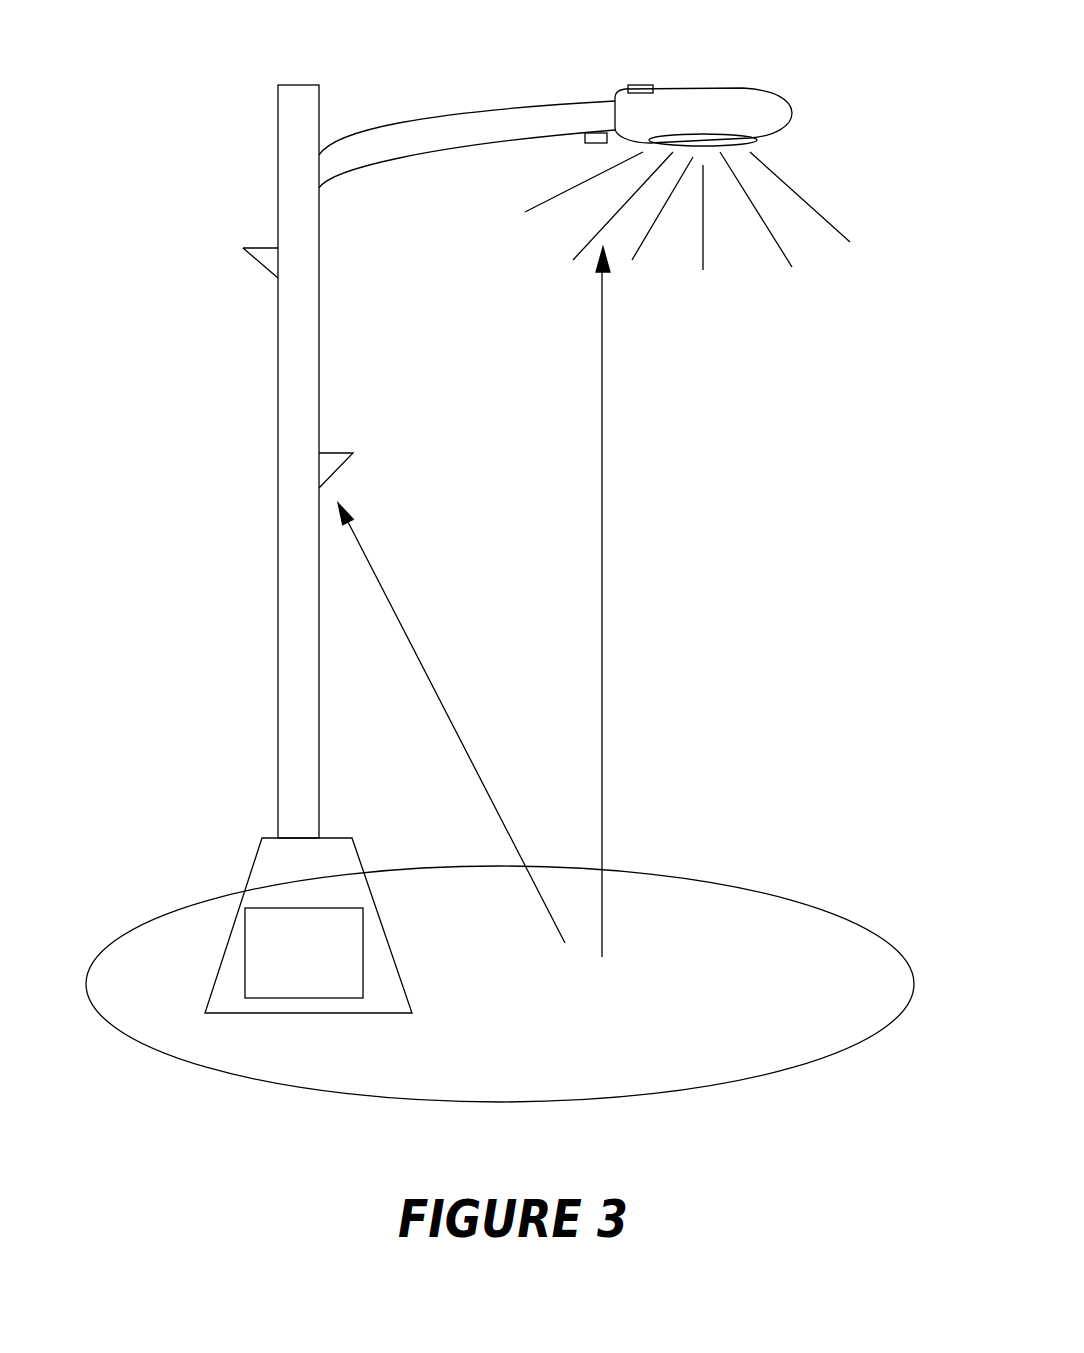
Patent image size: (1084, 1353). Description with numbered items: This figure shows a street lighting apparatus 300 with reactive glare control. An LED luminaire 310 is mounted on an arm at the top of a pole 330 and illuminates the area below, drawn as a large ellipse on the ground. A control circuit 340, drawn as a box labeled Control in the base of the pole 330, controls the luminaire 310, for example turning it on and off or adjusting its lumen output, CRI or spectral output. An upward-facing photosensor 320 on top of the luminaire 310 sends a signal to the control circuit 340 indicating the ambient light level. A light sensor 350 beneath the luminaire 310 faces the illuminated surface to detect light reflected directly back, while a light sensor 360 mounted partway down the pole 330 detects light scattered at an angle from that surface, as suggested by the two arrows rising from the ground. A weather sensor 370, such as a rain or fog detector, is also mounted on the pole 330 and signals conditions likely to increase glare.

The street lighting apparatus 300 is at (128, 22).
The LED luminaire 310 is at (720, 88).
The upward-facing photosensor 320 is at (642, 85).
The pole 330 is at (302, 83).
The control circuit 340 is at (305, 998).
The light sensor 350 is at (596, 145).
The light sensor 360 is at (337, 453).
The weather sensor 370 is at (260, 247).